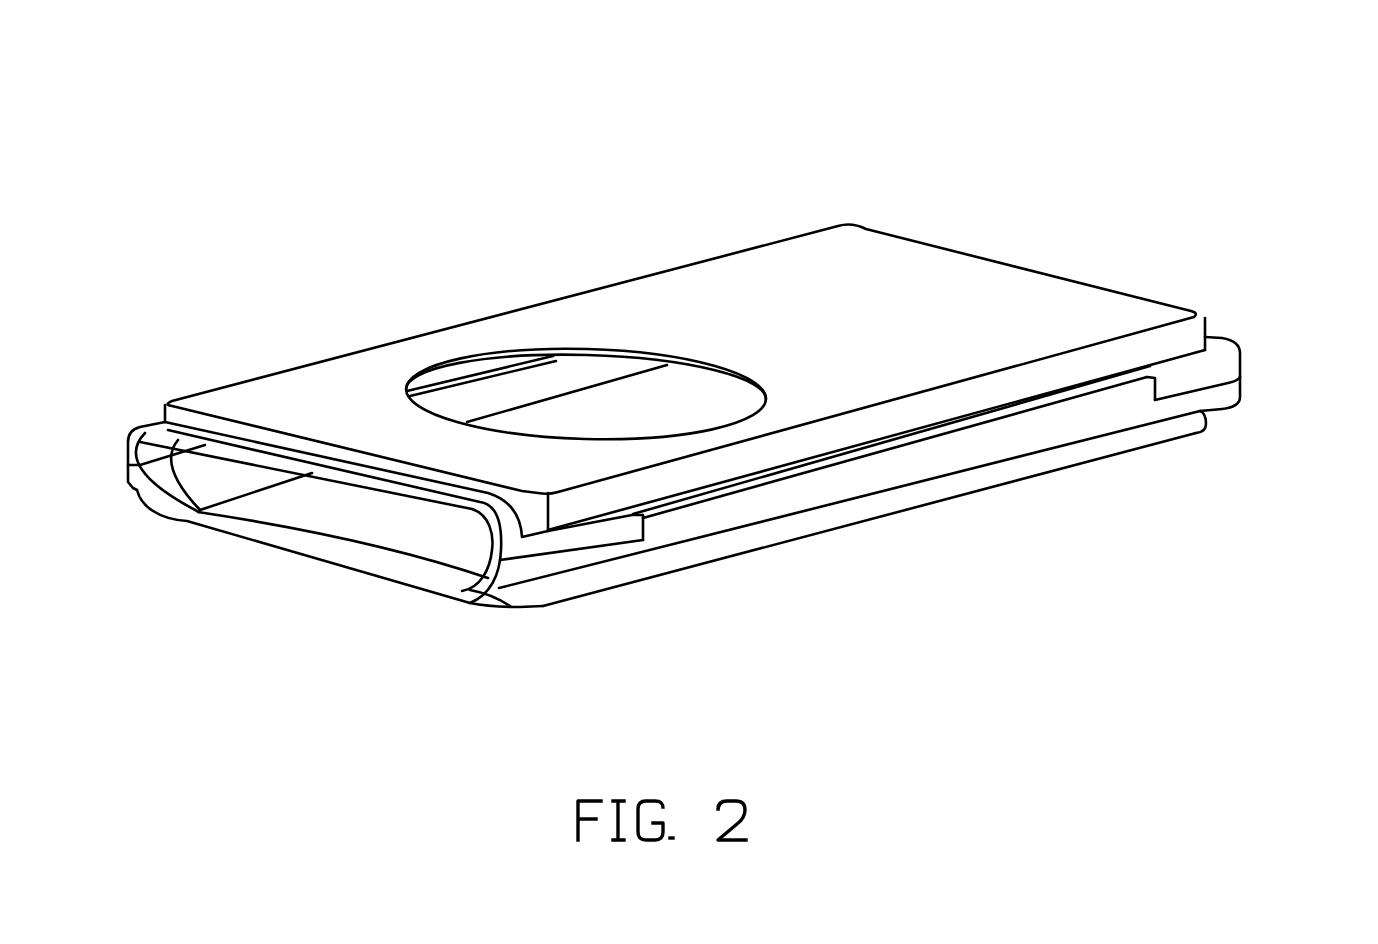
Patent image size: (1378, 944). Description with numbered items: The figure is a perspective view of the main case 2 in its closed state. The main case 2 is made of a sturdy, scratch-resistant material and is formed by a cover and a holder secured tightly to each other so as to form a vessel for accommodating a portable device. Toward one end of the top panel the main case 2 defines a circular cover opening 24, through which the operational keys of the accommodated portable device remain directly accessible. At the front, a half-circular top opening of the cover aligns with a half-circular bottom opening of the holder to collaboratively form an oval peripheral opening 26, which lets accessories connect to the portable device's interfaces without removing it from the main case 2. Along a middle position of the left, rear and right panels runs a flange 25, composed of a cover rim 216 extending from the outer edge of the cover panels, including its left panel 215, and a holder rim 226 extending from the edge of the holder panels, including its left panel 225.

The main case 2 is at (638, 73).
The cover opening 24 is at (515, 388).
The peripheral opening 26 is at (163, 485).
The left panel 215 is at (893, 410).
The left panel 225 is at (1078, 452).
The cover rim 216 is at (1233, 363).
The holder rim 226 is at (1225, 394).
The flange 25 is at (1266, 372).